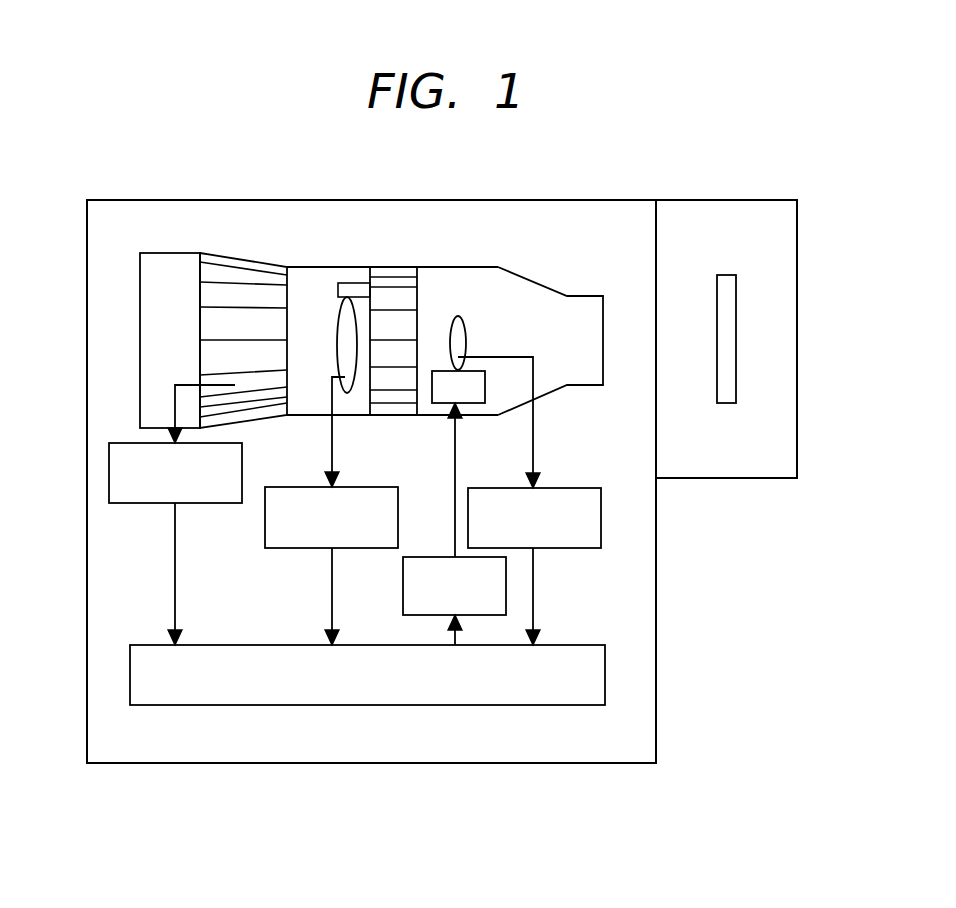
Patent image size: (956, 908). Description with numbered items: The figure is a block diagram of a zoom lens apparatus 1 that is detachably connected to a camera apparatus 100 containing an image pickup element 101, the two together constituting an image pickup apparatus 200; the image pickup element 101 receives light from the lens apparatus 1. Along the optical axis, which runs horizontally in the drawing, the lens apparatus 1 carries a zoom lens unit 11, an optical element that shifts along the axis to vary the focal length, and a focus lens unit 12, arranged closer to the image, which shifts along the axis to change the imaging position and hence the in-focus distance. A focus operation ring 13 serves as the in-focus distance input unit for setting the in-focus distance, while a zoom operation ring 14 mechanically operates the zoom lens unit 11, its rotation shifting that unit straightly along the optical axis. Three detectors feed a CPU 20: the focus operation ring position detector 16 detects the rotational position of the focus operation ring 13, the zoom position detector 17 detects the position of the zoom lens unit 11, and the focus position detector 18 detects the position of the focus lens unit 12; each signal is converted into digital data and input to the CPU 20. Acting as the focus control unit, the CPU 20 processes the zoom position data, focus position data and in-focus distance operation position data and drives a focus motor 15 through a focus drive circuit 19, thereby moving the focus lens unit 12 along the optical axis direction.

The lens apparatus 1 is at (603, 200).
The zoom lens unit 11 is at (342, 328).
The focus lens unit 12 is at (462, 328).
The focus operation ring 13 is at (245, 263).
The zoom operation ring 14 is at (393, 270).
The focus motor 15 is at (472, 404).
The focus operation ring position detector 16 is at (200, 503).
The zoom position detector 17 is at (362, 487).
The focus position detector 18 is at (563, 487).
The focus drive circuit 19 is at (440, 557).
The CPU 20 is at (542, 706).
The camera apparatus 100 is at (762, 198).
The image pickup element 101 is at (724, 276).
The image pickup apparatus 200 is at (728, 153).